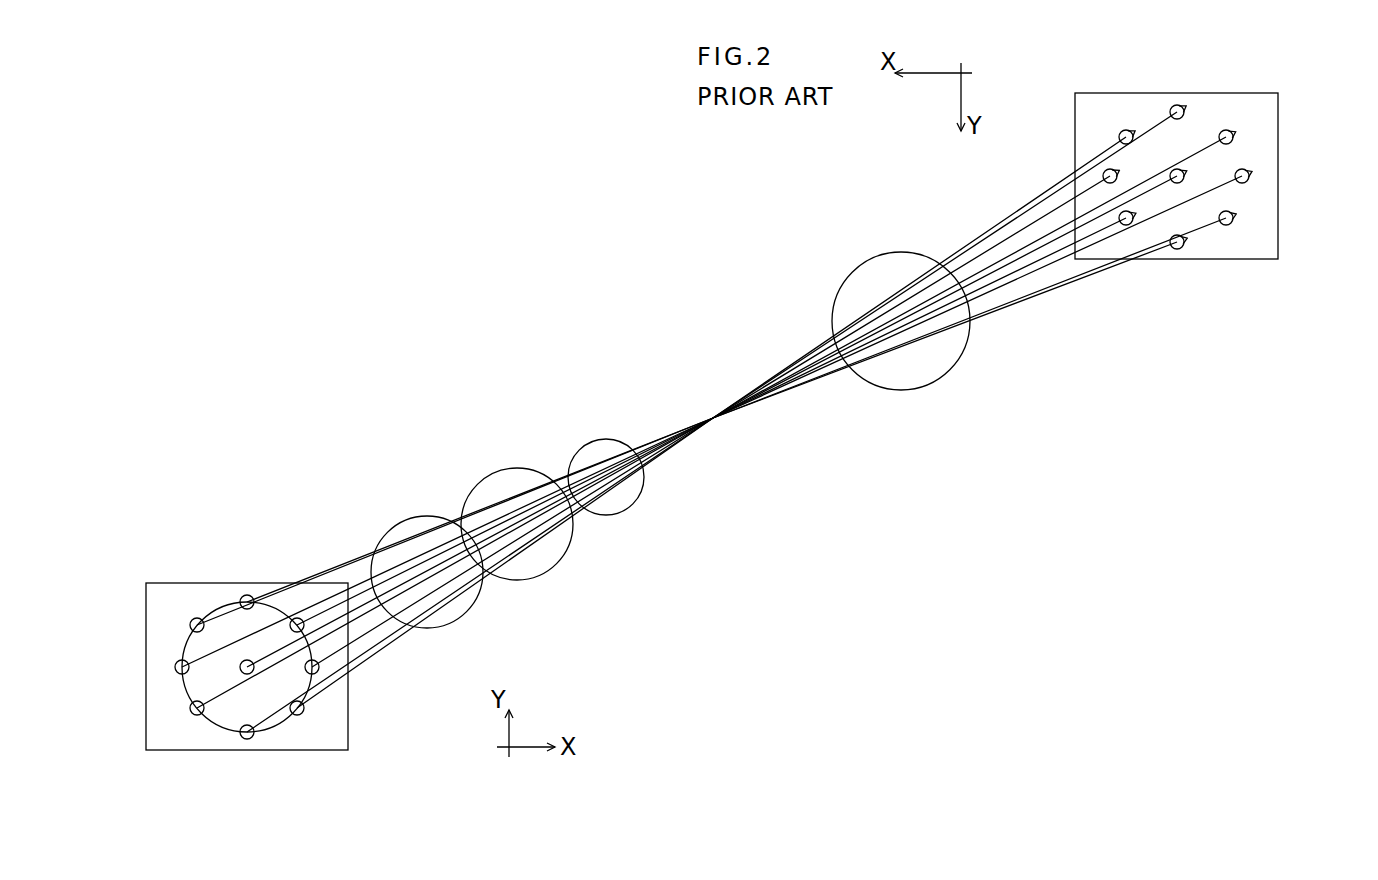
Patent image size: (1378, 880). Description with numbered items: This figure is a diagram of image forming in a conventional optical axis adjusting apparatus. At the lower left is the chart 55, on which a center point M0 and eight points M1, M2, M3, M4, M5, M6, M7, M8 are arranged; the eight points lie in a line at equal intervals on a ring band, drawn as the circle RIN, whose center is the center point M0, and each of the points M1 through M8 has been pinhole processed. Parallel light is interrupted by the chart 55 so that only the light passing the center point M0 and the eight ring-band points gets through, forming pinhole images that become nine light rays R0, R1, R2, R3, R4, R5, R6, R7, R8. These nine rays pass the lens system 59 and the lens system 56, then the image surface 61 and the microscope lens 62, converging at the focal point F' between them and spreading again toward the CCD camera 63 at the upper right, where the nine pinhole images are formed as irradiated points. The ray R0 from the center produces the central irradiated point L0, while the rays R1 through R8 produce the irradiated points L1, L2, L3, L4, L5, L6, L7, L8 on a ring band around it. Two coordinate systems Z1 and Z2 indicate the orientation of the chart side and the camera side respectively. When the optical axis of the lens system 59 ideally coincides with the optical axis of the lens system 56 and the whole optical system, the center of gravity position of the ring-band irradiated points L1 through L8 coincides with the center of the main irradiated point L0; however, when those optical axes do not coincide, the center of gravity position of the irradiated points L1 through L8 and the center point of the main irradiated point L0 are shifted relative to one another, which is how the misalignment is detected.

The chart 55 is at (170, 603).
The lens system 56 is at (540, 582).
The lens system 59 is at (458, 628).
The image surface 61 is at (632, 512).
The microscope lens 62 is at (940, 385).
The CCD camera 63 is at (1252, 238).
The focal point F' is at (710, 459).
The input beam circle RIN is at (207, 612).
The first coordinate system Z1 is at (535, 735).
The second coordinate system Z2 is at (934, 85).
The center point M0 is at (242, 672).
The point M1 is at (247, 595).
The point M2 is at (298, 617).
The point M3 is at (318, 676).
The point M4 is at (298, 718).
The point M5 is at (247, 740).
The point M6 is at (196, 716).
The point M7 is at (175, 668).
The point M8 is at (190, 627).
The light ray R0 is at (240, 650).
The light ray R1 is at (266, 595).
The light ray R2 is at (340, 613).
The light ray R3 is at (340, 652).
The light ray R4 is at (330, 705).
The light ray R5 is at (280, 715).
The light ray R6 is at (222, 700).
The light ray R7 is at (175, 644).
The light ray R8 is at (220, 610).
The irradiated point L0 is at (1185, 176).
The irradiated point L1 is at (1177, 252).
The irradiated point L2 is at (1122, 228).
The irradiated point L3 is at (1104, 172).
The irradiated point L4 is at (1124, 128).
The irradiated point L5 is at (1177, 104).
The irradiated point L6 is at (1238, 128).
The irradiated point L7 is at (1250, 170).
The irradiated point L8 is at (1234, 218).